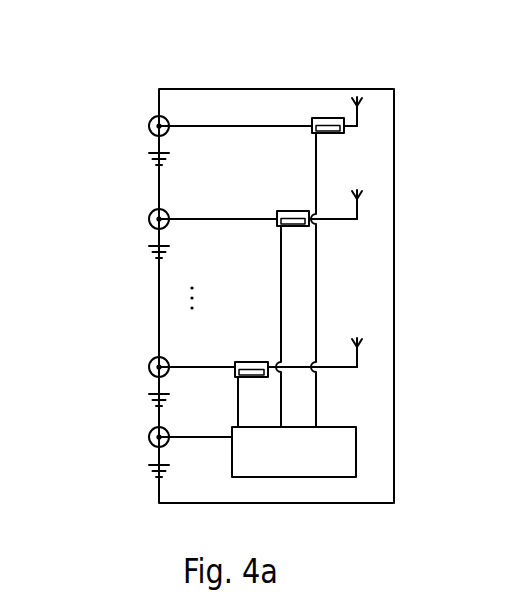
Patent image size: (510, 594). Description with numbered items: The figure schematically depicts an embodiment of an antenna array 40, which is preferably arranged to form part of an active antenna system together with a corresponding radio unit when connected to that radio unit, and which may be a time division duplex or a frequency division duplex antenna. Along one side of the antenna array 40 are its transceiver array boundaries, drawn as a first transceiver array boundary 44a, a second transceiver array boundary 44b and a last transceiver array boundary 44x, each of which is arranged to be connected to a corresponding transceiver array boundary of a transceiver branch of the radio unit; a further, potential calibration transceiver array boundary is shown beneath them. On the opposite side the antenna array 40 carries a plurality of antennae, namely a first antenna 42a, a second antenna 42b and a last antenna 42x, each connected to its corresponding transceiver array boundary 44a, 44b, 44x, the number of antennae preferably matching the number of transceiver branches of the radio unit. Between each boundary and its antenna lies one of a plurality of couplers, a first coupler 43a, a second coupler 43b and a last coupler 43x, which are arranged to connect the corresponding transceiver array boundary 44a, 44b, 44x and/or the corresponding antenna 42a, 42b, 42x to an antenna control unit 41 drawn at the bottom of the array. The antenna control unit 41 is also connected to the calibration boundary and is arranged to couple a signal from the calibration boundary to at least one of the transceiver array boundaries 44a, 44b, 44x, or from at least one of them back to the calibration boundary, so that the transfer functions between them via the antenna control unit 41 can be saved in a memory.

The antenna array 40 is at (258, 167).
The antenna control unit 41 is at (307, 470).
The antenna 42a is at (374, 116).
The antenna 42b is at (374, 209).
The antenna 42x is at (374, 353).
The coupler 43a is at (333, 103).
The coupler 43b is at (285, 196).
The coupler 43x is at (242, 350).
The transceiver array boundary 44a is at (136, 137).
The transceiver array boundary 44b is at (136, 230).
The transceiver array boundary 44x is at (136, 378).